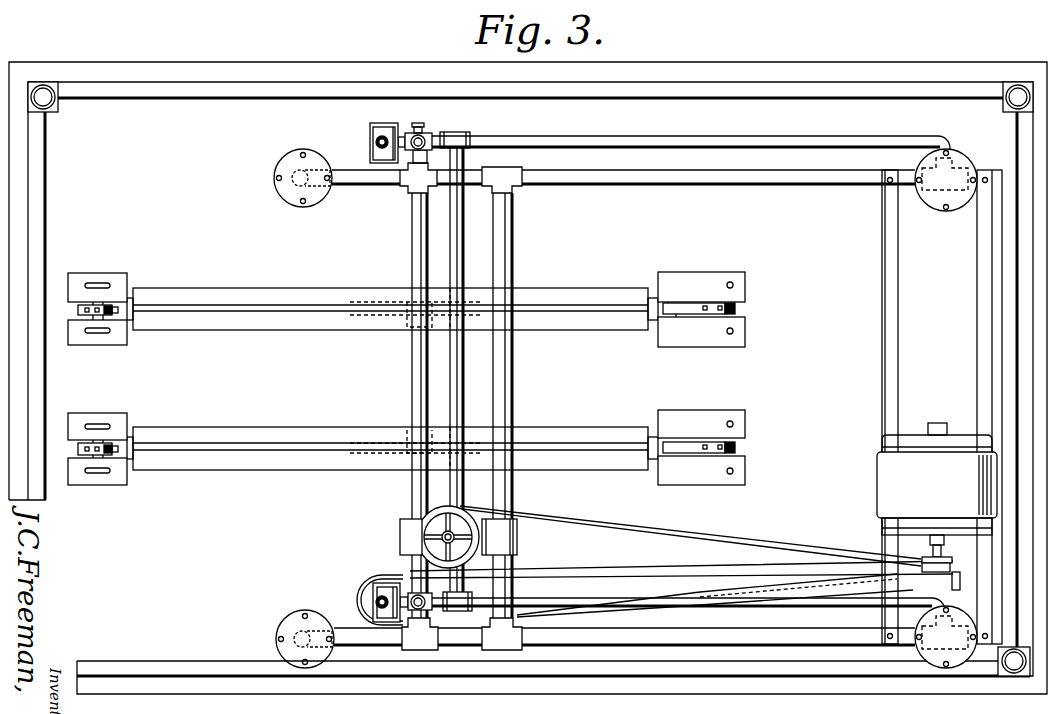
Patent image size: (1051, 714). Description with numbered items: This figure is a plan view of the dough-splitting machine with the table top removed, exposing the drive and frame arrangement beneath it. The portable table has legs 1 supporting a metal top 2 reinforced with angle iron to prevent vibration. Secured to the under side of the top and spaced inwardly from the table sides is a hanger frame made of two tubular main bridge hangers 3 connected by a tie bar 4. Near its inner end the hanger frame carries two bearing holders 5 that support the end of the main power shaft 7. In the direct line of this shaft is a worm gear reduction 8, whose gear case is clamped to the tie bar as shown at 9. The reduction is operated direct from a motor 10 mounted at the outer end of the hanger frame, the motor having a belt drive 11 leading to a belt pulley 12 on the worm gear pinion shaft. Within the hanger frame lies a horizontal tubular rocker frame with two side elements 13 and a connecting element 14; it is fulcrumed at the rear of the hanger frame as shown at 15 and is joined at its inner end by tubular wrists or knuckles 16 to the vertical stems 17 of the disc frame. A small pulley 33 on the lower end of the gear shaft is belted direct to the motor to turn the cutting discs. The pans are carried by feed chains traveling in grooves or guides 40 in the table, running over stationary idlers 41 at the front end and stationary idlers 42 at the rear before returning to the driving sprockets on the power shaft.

The legs 1 is at (60, 112).
The metal top 2 is at (331, 68).
The main bridge hangers 3 is at (697, 185).
The tie bar 4 is at (512, 241).
The bearing holders 5 is at (404, 189).
The main power shaft 7 is at (414, 364).
The worm gear reduction 8 is at (400, 532).
The gear case clamp 9 is at (517, 541).
The motor 10 is at (882, 482).
The belt drive 11 is at (708, 533).
The belt pulley 12 is at (422, 515).
The side elements 13 is at (698, 136).
The connecting element 14 is at (462, 384).
The fulcrum 15 is at (950, 160).
The tubular wrists or knuckles 16 is at (370, 133).
The vertical stems 17 is at (370, 143).
The small pulley 33 is at (365, 596).
The grooves or guides 40 is at (229, 326).
The stationary idlers 41 is at (88, 314).
The stationary idlers 42 is at (738, 307).